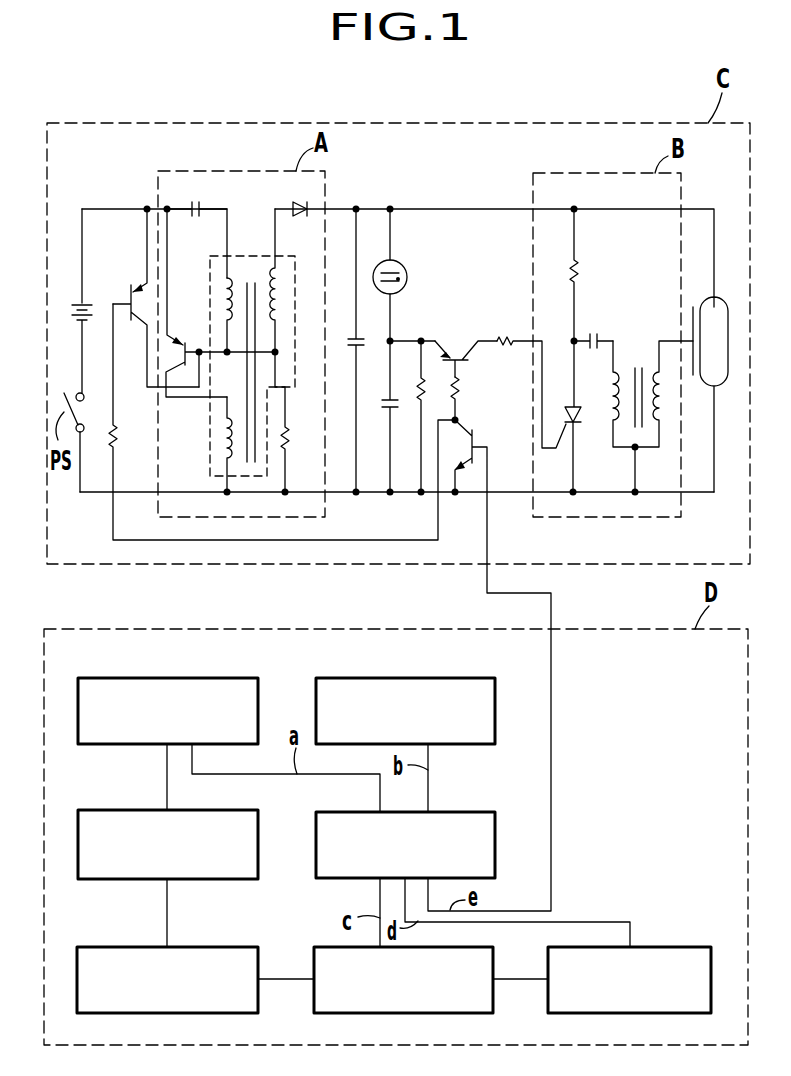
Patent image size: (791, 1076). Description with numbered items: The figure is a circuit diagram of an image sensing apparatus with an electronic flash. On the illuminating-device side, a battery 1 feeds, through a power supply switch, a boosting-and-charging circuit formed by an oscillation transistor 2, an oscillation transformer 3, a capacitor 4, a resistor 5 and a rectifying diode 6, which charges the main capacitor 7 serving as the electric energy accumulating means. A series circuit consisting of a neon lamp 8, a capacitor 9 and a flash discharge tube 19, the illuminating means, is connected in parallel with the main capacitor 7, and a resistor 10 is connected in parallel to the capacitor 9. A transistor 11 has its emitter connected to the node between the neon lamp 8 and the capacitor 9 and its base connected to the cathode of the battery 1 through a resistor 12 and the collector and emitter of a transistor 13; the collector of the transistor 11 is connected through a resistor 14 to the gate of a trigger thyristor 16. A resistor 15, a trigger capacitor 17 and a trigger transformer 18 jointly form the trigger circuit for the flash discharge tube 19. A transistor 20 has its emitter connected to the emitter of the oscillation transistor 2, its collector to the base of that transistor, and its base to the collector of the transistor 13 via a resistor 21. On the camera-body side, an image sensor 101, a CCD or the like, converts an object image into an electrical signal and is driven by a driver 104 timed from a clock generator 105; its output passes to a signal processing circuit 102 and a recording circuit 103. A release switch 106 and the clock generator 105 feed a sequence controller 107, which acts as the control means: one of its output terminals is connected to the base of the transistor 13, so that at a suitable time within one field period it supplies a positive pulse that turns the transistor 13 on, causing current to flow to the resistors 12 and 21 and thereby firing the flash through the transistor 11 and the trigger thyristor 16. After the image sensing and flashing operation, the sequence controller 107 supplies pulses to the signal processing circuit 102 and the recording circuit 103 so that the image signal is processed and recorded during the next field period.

The battery 1 is at (75, 306).
The oscillation transistor 2 is at (177, 335).
The oscillation transformer 3 is at (253, 256).
The capacitor 4 is at (197, 200).
The resistor 5 is at (290, 441).
The rectifying diode 6 is at (296, 203).
The main capacitor 7 is at (348, 339).
The neon lamp 8 is at (408, 280).
The capacitor 9 is at (383, 398).
The resistor 10 is at (417, 387).
The transistor 11 is at (453, 355).
The resistor 12 is at (464, 389).
The transistor 13 is at (478, 436).
The resistor 14 is at (504, 336).
The resistor 15 is at (588, 271).
The trigger thyristor 16 is at (564, 405).
The trigger capacitor 17 is at (592, 333).
The trigger transformer 18 is at (656, 344).
The flash discharge tube 19 is at (724, 301).
The transistor 20 is at (127, 284).
The resistor 21 is at (118, 437).
The image sensor 101 is at (229, 947).
The signal processing circuit 102 is at (477, 947).
The recording circuit 103 is at (680, 947).
The driver 104 is at (228, 810).
The clock generator 105 is at (222, 678).
The release switch 106 is at (455, 678).
The sequence controller 107 is at (475, 812).